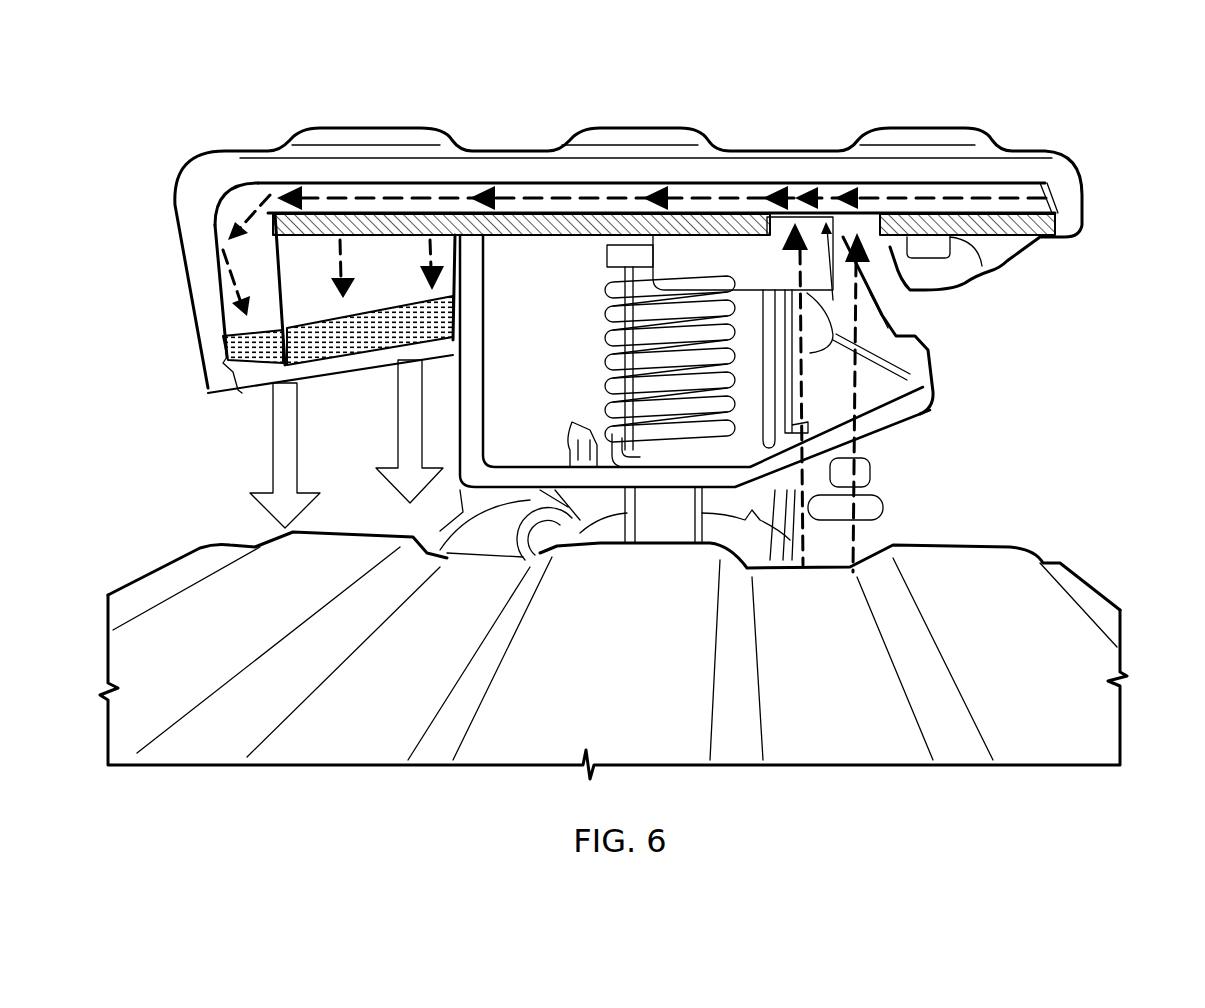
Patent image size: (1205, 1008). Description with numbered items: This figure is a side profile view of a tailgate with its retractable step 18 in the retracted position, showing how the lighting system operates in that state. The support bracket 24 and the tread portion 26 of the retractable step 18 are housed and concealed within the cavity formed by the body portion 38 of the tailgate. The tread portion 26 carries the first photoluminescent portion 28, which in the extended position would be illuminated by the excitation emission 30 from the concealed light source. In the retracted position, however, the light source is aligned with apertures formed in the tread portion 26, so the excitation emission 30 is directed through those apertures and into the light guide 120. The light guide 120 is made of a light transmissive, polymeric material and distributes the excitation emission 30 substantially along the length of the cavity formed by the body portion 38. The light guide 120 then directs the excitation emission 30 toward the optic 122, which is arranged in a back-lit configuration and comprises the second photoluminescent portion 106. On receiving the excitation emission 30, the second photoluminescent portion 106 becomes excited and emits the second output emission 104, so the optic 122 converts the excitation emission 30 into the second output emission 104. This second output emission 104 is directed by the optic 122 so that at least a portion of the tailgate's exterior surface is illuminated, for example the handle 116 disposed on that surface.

The retractable step 18 is at (1093, 93).
The support bracket 24 is at (1050, 226).
The tread portion 26 is at (1015, 245).
The first photoluminescent portion 28 is at (387, 225).
The excitation emission 30 is at (827, 205).
The body portion 38 is at (920, 522).
The second output emission 104 is at (400, 432).
The second photoluminescent portion 106 is at (355, 330).
The handle 116 is at (832, 238).
The light guide 120 is at (898, 198).
The optic 122 is at (228, 337).